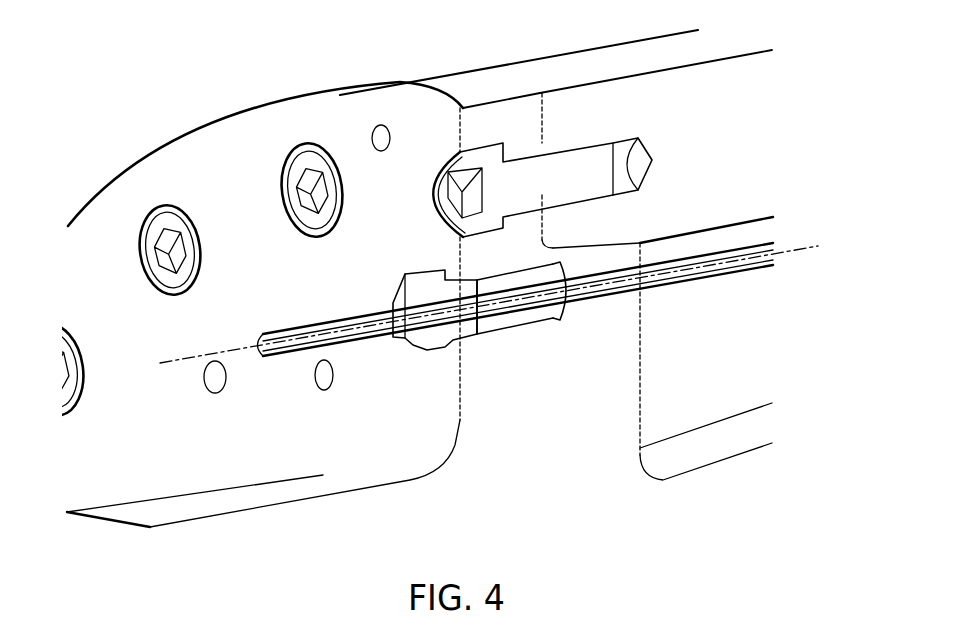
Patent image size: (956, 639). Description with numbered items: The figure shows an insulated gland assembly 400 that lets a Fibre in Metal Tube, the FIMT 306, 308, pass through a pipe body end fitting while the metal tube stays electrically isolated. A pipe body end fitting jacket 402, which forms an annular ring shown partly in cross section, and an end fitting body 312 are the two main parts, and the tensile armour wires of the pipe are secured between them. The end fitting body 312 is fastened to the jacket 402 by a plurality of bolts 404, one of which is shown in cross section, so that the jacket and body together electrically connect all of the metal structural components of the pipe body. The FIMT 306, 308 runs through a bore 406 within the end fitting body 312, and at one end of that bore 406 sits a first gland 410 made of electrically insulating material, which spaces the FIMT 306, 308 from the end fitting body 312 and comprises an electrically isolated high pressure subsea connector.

The FIMT 306 is at (800, 248).
The FIMT 308 is at (520, 307).
The end fitting body 312 is at (490, 113).
The insulated gland assembly 400 is at (447, 342).
The pipe body end fitting jacket 402 is at (723, 158).
The bolts 404 is at (153, 217).
The bore 406 is at (608, 297).
The first gland 410 is at (410, 347).